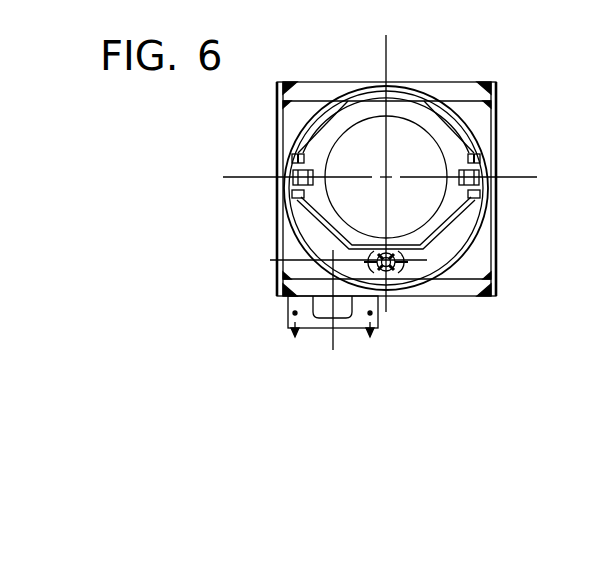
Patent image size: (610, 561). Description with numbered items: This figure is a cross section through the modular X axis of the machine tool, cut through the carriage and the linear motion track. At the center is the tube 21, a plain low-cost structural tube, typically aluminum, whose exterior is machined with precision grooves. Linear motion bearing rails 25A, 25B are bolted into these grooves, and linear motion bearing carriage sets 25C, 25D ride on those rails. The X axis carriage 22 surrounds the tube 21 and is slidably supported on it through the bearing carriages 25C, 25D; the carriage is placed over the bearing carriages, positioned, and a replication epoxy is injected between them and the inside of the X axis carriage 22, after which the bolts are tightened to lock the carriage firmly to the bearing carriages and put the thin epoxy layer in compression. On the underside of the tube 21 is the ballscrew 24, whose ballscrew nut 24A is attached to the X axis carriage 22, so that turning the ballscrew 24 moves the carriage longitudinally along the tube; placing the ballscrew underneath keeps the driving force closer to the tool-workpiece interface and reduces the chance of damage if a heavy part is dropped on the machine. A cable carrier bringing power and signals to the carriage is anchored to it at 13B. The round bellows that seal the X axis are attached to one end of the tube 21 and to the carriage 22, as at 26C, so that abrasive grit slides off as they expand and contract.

The tube 21 is at (362, 113).
The X axis carriage 22 is at (443, 90).
The linear motion bearing rail 25A is at (473, 177).
The linear motion bearing rail 25B is at (297, 195).
The linear motion bearing carriage set 25C is at (478, 157).
The linear motion bearing carriage set 25D is at (300, 161).
The bellows attachment 26C is at (473, 245).
The ballscrew 24 is at (393, 268).
The ballscrew nut 24A is at (405, 262).
The cable carrier anchor 13B is at (287, 322).